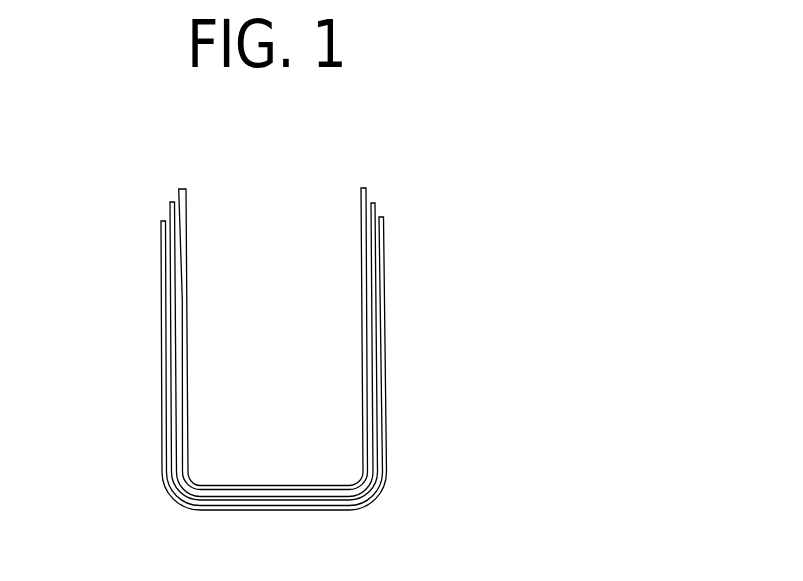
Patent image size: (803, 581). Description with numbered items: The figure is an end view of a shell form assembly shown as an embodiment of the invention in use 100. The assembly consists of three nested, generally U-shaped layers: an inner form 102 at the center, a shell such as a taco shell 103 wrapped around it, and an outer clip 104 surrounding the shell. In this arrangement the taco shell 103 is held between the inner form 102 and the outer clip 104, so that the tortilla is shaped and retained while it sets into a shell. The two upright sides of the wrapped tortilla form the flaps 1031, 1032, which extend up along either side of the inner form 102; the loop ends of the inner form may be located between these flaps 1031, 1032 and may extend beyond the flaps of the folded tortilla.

The embodiment of the invention in use 100 is at (367, 306).
The inner form 102 is at (379, 186).
The taco shell 103 is at (383, 204).
The outer clip 104 is at (393, 262).
The flap 1031 is at (378, 398).
The flap 1032 is at (176, 428).